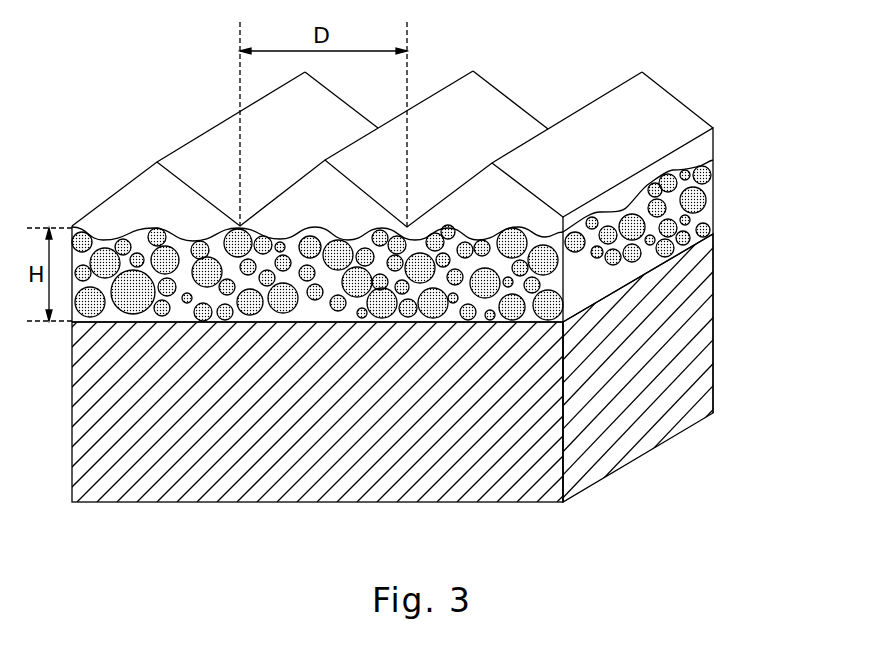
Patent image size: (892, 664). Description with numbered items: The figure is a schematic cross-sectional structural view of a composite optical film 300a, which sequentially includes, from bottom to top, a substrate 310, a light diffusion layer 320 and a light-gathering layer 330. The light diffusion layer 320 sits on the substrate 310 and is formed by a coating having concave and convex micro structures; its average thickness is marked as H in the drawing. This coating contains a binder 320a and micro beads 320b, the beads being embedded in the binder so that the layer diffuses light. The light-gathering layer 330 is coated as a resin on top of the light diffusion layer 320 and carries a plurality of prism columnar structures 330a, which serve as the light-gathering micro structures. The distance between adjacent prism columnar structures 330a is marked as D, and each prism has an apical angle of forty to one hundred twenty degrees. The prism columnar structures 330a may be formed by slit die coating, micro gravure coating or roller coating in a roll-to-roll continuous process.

The composite optical film 300a is at (429, 331).
The substrate 310 is at (702, 353).
The light diffusion layer 320 is at (465, 331).
The binder 320a is at (705, 218).
The micro beads 320b is at (707, 200).
The light-gathering layer 330 is at (434, 242).
The prism columnar structures 330a is at (672, 120).